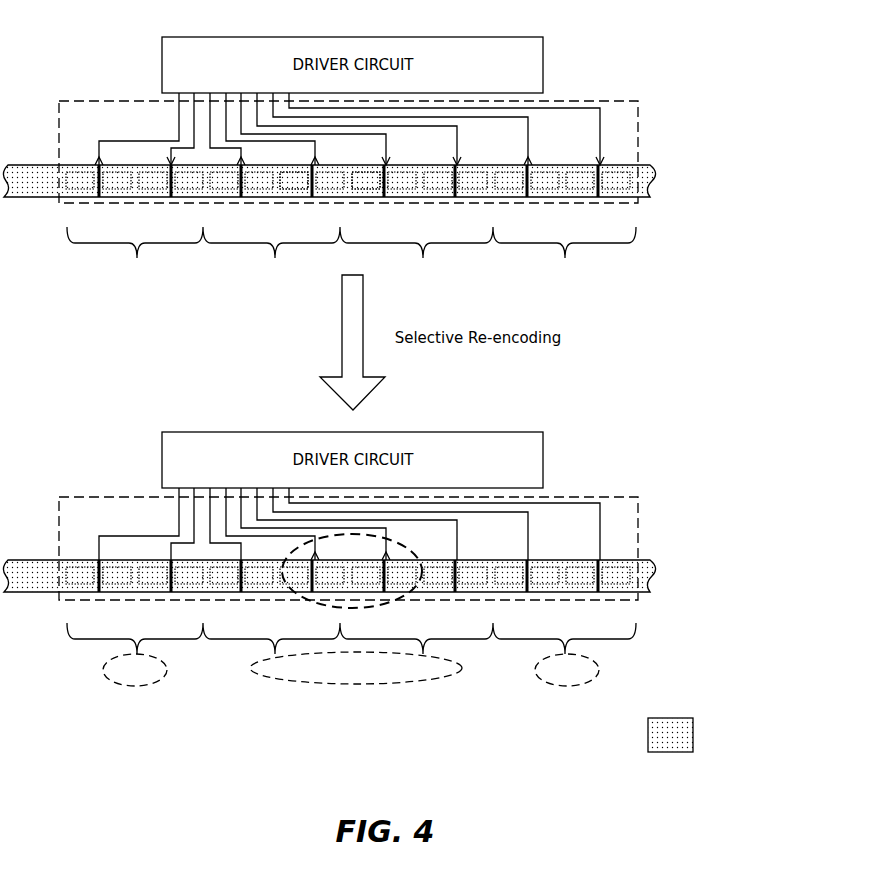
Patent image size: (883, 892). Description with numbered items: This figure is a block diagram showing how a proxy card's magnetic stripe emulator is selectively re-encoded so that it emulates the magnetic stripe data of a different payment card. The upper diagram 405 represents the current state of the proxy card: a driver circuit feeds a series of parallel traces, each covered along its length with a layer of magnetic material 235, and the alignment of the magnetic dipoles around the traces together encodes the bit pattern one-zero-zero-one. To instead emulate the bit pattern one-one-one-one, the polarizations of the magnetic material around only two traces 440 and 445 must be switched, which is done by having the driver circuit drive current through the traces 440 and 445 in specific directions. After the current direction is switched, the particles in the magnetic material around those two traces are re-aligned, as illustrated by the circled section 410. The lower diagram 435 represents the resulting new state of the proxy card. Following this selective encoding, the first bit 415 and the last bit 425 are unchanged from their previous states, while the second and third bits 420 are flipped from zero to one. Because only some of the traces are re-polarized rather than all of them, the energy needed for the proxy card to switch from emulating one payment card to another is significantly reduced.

The diagram 405 is at (772, 142).
The trace 440 is at (313, 180).
The trace 445 is at (380, 180).
The diagram 435 is at (692, 442).
The section 410 is at (422, 546).
The first bit 415 is at (137, 692).
The second and third bits 420 is at (362, 695).
The last bit 425 is at (567, 692).
The magnetic material 235 is at (691, 735).